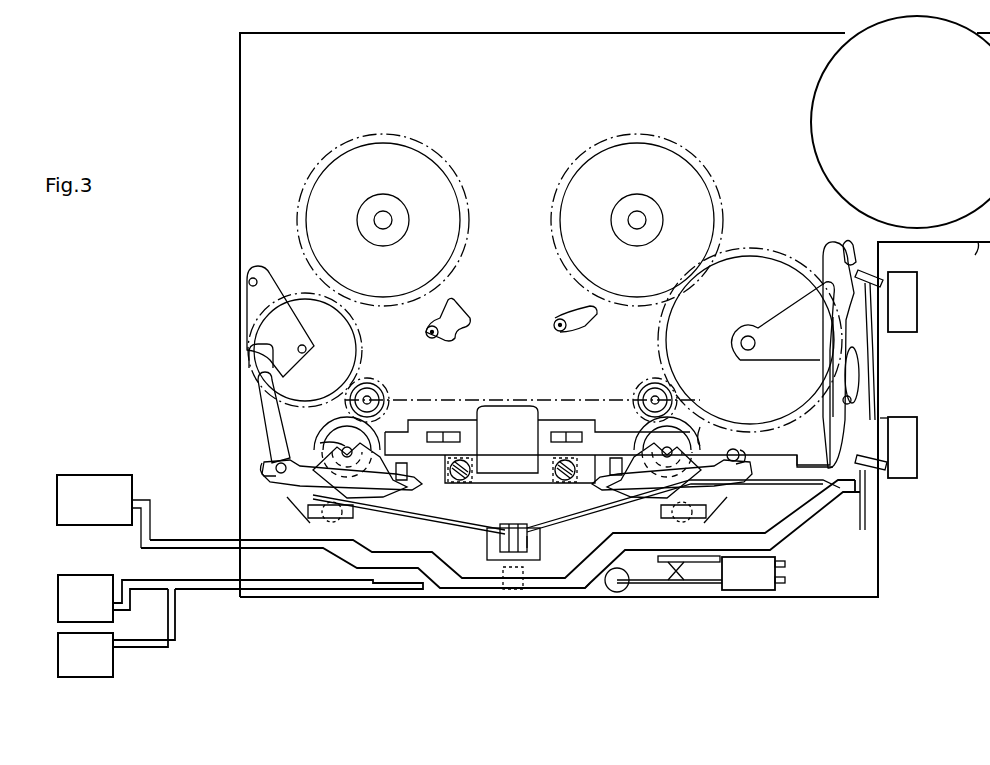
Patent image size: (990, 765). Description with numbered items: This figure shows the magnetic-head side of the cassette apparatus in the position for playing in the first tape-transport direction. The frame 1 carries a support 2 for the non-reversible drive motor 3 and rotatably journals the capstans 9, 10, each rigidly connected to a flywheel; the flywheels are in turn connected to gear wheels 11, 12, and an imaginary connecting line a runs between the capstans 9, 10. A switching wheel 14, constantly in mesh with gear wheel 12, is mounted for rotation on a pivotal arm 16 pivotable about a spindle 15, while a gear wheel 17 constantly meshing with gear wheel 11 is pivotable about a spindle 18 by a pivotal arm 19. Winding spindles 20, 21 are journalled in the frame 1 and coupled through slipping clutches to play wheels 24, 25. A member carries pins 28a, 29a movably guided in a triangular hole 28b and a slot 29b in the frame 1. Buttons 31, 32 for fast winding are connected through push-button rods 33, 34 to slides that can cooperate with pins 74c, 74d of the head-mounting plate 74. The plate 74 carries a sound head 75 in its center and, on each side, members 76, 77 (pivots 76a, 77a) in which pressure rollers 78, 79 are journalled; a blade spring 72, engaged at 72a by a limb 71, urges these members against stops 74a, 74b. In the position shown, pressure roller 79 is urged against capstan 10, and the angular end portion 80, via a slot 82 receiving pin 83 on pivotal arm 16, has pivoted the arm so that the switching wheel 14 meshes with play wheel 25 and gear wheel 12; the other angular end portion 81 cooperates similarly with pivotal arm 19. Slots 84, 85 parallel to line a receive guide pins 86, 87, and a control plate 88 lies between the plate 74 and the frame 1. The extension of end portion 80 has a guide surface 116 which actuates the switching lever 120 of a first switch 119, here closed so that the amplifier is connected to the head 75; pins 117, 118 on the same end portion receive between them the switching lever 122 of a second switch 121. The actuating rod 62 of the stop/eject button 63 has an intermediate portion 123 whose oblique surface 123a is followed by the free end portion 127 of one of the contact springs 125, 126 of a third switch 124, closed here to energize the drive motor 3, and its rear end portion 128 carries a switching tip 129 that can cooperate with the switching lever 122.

The frame 1 is at (248, 130).
The support 2 is at (975, 255).
The drive motor 3 is at (830, 74).
The capstan 9 is at (370, 390).
The capstan 10 is at (650, 388).
The gear wheel 11 is at (393, 396).
The gear wheel 12 is at (638, 395).
The switching wheel 14 is at (762, 256).
The spindle 15 is at (826, 318).
The pivotal arm 16 is at (778, 313).
The gear wheel 17 is at (258, 366).
The spindle 18 is at (250, 284).
The pivotal arm 19 is at (262, 342).
The winding spindle 20 is at (390, 212).
The winding spindle 21 is at (637, 212).
The play wheel 24 is at (424, 152).
The play wheel 25 is at (641, 150).
The pin 28a is at (426, 328).
The triangular hole 28b is at (452, 306).
The pin 29a is at (554, 322).
The slot 29b is at (585, 311).
The button 31 is at (112, 665).
The button 32 is at (78, 586).
The push-button rod 33 is at (176, 636).
The push-button rod 34 is at (152, 580).
The actuating rod 62 is at (148, 518).
The stop/eject button 63 is at (88, 490).
The limb 71 is at (497, 544).
The blade spring 72 is at (575, 516).
The wire end 72a is at (530, 544).
The head-mounting plate 74 is at (412, 518).
The stop 74a is at (410, 478).
The stop 74b is at (616, 478).
The pin 74c is at (470, 484).
The pin 74d is at (548, 484).
The sound head 75 is at (518, 418).
The member 76 is at (282, 498).
The pivot 76a is at (272, 470).
The member 77 is at (722, 470).
The pivot 77a is at (745, 454).
The pressure roller 78 is at (320, 443).
The pressure roller 79 is at (700, 427).
The angular end portion 80 is at (830, 448).
The angular end portion 81 is at (273, 418).
The slot 82 is at (860, 362).
The pin 83 is at (852, 400).
The slot 84 is at (308, 523).
The slot 85 is at (700, 513).
The guide pin 86 is at (355, 520).
The guide pin 87 is at (688, 518).
The control plate 88 is at (570, 432).
The guide surface 116 is at (847, 244).
The pin 117 is at (866, 505).
The pin 118 is at (885, 418).
The first switch 119 is at (905, 310).
The switching lever 120 is at (878, 272).
The second switch 121 is at (905, 440).
The switching lever 122 is at (878, 478).
The intermediate portion 123 is at (478, 597).
The oblique surface 123a is at (590, 590).
The third switch 124 is at (745, 580).
The contact spring 125 is at (660, 586).
The contact spring 126 is at (712, 595).
The free end portion 127 is at (622, 592).
The rear end portion 128 is at (800, 520).
The switching tip 129 is at (850, 497).
The imaginary connecting line a is at (470, 398).